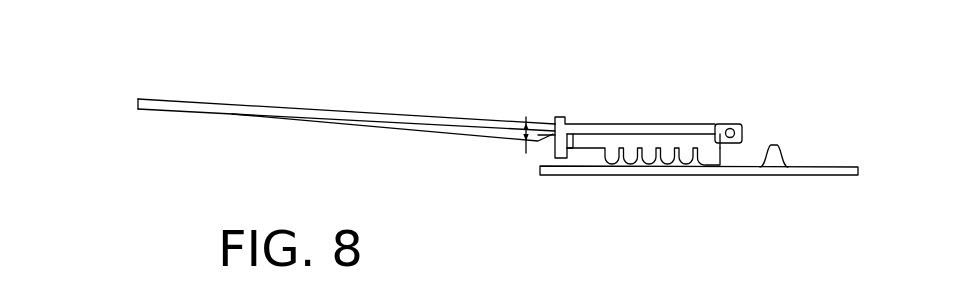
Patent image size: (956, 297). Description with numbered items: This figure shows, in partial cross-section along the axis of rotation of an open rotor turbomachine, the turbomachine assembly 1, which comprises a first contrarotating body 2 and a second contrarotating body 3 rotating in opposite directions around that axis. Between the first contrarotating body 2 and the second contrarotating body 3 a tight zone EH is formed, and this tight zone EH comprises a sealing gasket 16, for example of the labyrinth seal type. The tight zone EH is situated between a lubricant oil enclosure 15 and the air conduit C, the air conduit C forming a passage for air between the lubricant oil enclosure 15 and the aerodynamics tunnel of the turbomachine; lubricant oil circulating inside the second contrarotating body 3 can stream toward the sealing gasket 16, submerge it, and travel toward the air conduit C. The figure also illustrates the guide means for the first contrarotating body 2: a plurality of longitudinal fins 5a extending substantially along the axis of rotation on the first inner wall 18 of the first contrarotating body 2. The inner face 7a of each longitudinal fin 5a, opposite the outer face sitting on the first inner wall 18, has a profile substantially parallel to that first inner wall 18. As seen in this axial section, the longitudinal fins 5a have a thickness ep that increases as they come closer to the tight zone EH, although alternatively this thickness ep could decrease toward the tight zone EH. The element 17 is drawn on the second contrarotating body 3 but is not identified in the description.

The assembly 1 is at (248, 48).
The first contrarotating body 2 is at (310, 108).
The first inner wall 18 is at (147, 110).
The inner face 7a is at (343, 128).
The longitudinal fin 5a is at (483, 137).
The air conduit C is at (428, 93).
The thickness ep is at (523, 122).
The sealing gasket 16 is at (624, 133).
The tight zone EH is at (649, 94).
The lubricant oil enclosure 15 is at (681, 233).
The second contrarotating body 3 is at (830, 178).
The rib 17 is at (694, 177).